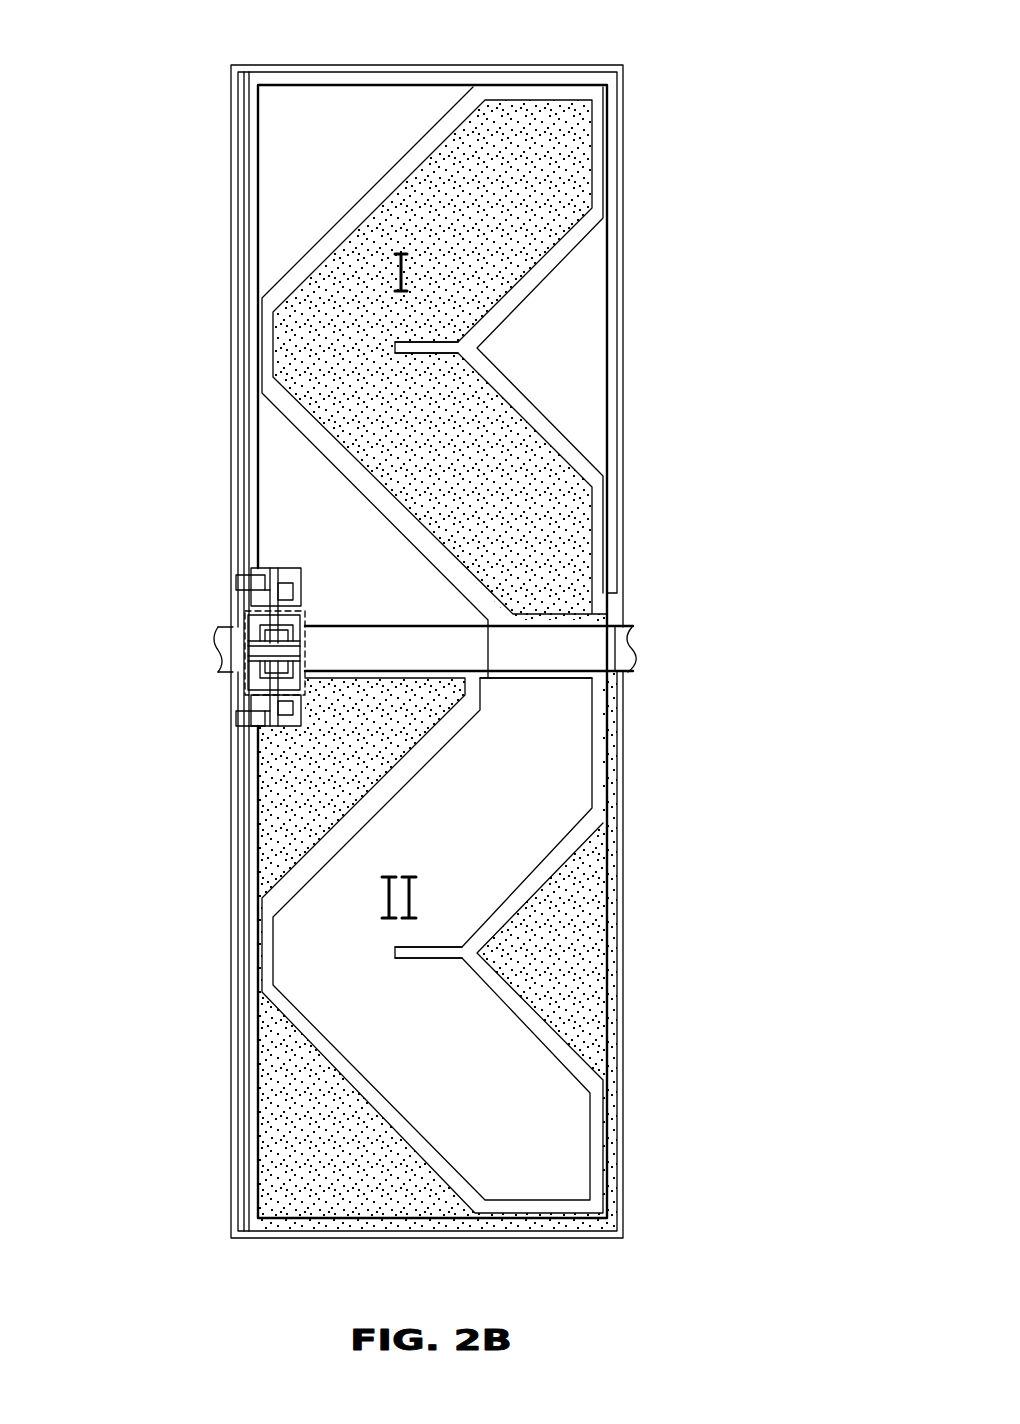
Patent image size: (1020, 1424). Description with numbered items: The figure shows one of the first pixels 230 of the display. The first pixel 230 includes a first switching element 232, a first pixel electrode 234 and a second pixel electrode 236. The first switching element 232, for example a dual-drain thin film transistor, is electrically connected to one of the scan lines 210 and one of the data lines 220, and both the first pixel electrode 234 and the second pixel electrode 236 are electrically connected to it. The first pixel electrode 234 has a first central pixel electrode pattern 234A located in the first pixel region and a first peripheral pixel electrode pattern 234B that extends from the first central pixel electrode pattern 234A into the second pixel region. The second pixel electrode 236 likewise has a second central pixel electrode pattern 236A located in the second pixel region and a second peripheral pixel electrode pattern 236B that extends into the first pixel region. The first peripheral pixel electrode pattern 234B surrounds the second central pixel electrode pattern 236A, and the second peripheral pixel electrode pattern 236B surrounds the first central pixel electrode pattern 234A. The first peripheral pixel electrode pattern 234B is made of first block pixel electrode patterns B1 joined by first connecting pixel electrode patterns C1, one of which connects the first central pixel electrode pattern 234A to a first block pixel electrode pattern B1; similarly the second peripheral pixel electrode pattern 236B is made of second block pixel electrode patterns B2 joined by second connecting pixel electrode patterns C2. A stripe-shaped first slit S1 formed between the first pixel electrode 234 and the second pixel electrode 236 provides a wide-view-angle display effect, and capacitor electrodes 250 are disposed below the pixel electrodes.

The capacitor electrodes 250 is at (428, 80).
The data line 220 is at (238, 100).
The first pixel 230 is at (760, 1278).
The first pixel electrode 234 is at (489, 693).
The first central pixel electrode pattern 234A is at (463, 382).
The first peripheral pixel electrode pattern 234B is at (498, 960).
The second pixel electrode 236 is at (317, 903).
The second central pixel electrode pattern 236A is at (322, 955).
The second peripheral pixel electrode pattern 236B is at (343, 728).
The scan line 210 is at (337, 640).
The first switching element 232 is at (243, 615).
The first block pixel electrode patterns B1 is at (600, 727).
The second block pixel electrode patterns B2 is at (276, 200).
The first connecting pixel electrode patterns C1 is at (608, 643).
The second connecting pixel electrode patterns C2 is at (265, 345).
The first slit S1 is at (537, 425).